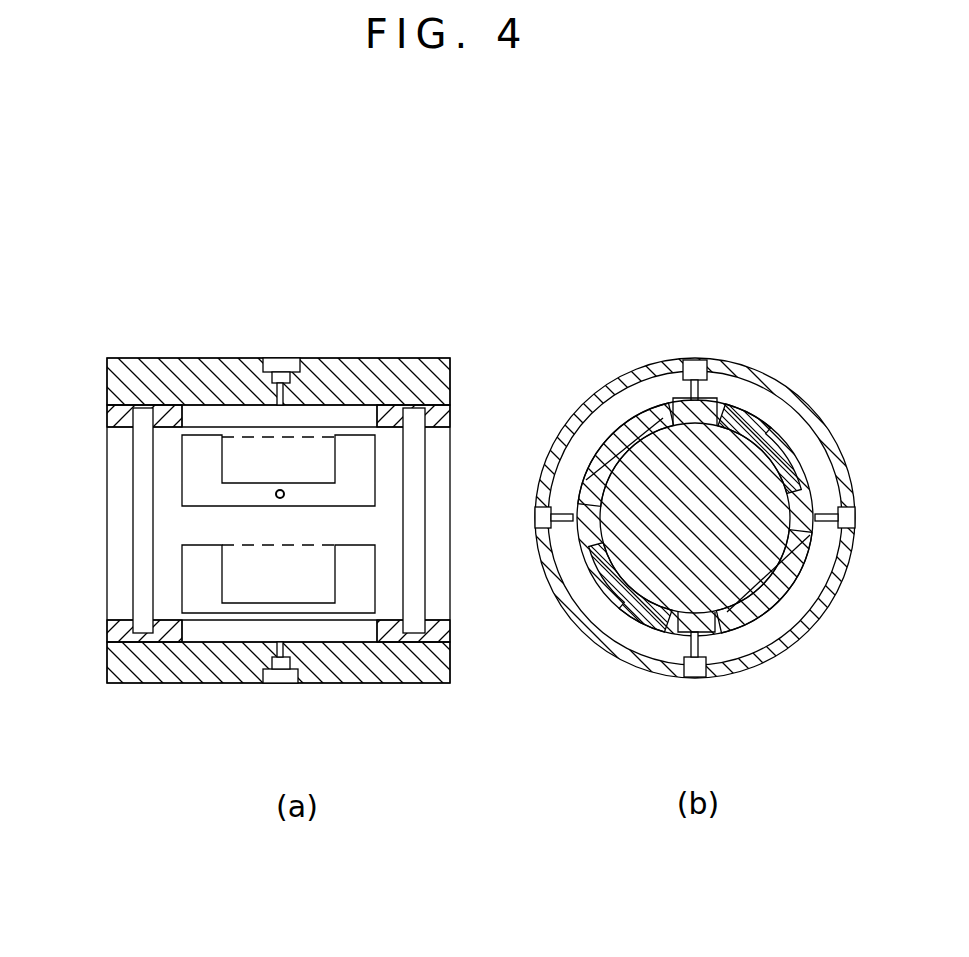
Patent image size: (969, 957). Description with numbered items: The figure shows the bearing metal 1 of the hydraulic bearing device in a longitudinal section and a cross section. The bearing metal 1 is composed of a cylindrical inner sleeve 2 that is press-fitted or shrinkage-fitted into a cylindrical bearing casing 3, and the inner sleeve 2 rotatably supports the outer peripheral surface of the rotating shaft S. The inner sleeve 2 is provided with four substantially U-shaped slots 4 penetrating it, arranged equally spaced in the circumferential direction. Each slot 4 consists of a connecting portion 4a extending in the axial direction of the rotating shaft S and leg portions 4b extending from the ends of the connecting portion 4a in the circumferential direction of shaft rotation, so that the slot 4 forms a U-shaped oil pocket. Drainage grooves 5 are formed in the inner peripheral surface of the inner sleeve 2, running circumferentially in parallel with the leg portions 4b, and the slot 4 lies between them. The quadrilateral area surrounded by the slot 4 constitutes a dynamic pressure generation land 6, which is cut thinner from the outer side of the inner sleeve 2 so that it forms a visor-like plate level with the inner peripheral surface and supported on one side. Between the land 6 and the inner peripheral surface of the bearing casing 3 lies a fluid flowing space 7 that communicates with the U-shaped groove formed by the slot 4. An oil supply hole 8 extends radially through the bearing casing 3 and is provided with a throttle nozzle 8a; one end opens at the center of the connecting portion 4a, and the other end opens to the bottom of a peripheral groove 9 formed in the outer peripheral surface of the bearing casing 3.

The bearing metal 1 is at (497, 367).
The inner sleeve 2 is at (440, 417).
The bearing casing 3 is at (413, 388).
The substantially U-shaped slot 4 is at (510, 628).
The connecting portion 4a is at (320, 506).
The leg portion 4b is at (202, 459).
The drainage groove 5 is at (413, 475).
The dynamic pressure generation land 6 is at (248, 458).
The fluid flowing space 7 is at (633, 425).
The oil supply hole 8 is at (283, 378).
The throttle nozzle 8a is at (288, 398).
The peripheral groove 9 is at (279, 365).
The rotating shaft S is at (750, 557).